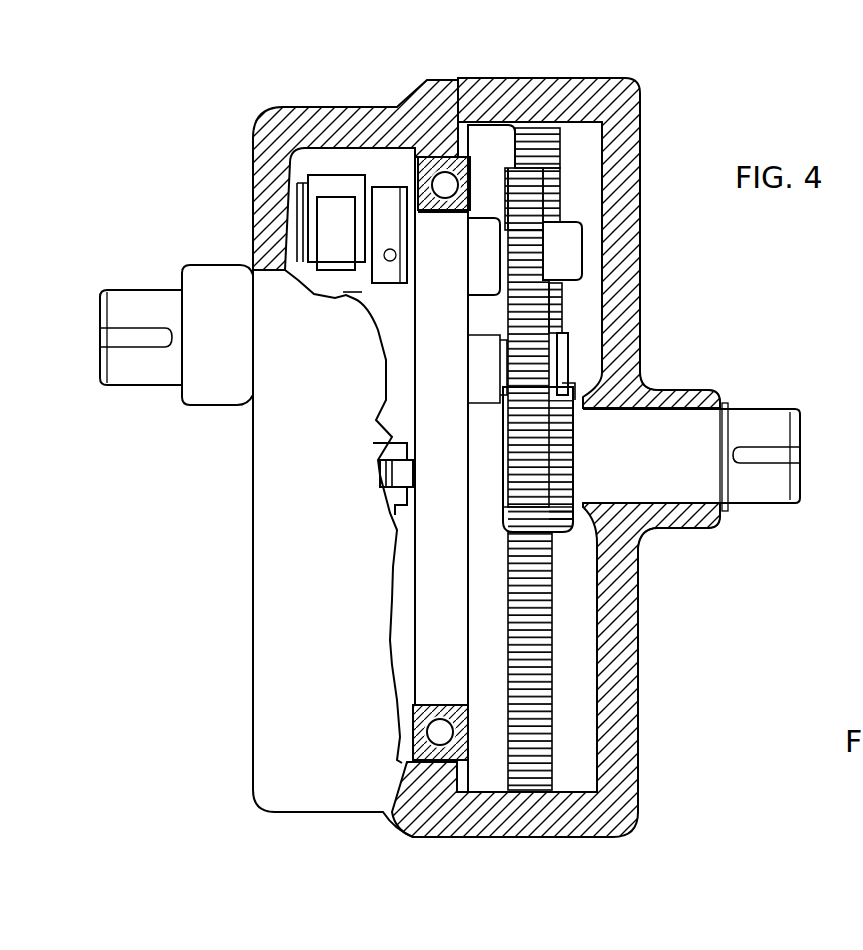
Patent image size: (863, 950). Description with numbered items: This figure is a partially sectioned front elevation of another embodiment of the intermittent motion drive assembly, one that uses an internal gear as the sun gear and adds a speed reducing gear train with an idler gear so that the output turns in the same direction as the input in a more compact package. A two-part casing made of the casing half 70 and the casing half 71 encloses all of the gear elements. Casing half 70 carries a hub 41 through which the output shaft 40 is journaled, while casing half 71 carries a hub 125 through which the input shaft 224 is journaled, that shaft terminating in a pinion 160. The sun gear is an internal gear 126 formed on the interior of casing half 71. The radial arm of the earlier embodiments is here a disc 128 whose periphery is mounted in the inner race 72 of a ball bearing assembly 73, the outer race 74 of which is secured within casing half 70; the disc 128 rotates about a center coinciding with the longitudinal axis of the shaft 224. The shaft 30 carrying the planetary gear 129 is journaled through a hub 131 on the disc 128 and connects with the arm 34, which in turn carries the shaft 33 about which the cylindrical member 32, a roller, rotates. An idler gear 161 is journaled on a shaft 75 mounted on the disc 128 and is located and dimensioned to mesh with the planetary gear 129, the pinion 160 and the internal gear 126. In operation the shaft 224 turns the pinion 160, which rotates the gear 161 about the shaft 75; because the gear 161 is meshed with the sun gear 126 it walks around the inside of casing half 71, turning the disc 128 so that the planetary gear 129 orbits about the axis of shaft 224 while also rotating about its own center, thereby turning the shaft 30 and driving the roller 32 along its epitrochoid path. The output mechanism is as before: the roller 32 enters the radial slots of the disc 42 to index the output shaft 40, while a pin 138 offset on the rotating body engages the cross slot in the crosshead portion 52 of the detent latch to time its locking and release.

The shaft 30 is at (570, 250).
The cylindrical member 32 is at (350, 178).
The shaft 33 is at (300, 213).
The radial arm 34 is at (387, 197).
The output shaft 40 is at (152, 293).
The hub 41 is at (207, 400).
The disc 42 is at (360, 292).
The crosshead portion 52 is at (383, 428).
The casing half 70 is at (338, 107).
The casing half 71 is at (590, 78).
The inner race 72 is at (443, 212).
The ball bearing assembly 73 is at (481, 733).
The outer race 74 is at (458, 752).
The shaft 75 is at (565, 363).
The hub 125 is at (695, 388).
The internal gear 126 is at (560, 138).
The disc 128 is at (427, 607).
The planetary gear 129 is at (537, 202).
The hub 131 is at (482, 260).
The pin 138 is at (393, 470).
The pinion 160 is at (568, 532).
The idler gear 161 is at (540, 328).
The input shaft 224 is at (772, 420).